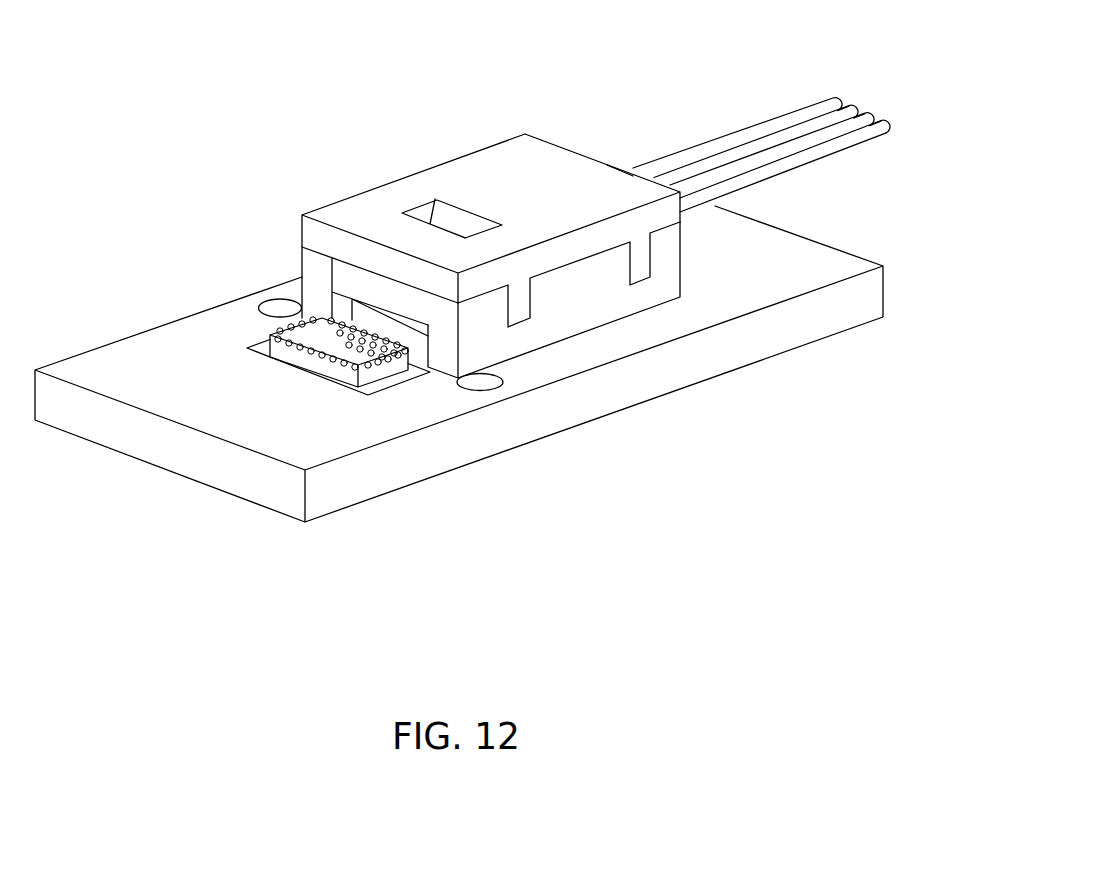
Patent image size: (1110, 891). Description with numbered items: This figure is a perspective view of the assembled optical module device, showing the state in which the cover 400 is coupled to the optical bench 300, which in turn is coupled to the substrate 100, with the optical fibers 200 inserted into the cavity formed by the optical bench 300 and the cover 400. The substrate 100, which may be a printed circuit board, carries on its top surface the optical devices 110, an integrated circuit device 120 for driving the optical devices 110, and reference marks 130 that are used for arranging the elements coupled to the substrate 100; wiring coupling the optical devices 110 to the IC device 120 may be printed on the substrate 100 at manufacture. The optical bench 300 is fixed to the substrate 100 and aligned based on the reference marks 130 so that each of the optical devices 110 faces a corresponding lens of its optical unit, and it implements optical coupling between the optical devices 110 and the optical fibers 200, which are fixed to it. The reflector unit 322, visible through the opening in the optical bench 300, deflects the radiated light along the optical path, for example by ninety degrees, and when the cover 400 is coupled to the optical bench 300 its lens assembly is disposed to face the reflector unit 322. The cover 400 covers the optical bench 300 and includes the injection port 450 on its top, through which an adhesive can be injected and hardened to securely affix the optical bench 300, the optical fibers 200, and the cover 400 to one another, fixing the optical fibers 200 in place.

The substrate 100 is at (120, 337).
The optical devices 110 is at (427, 372).
The integrated circuit (IC) device 120 is at (360, 350).
The reference marks 130 is at (272, 307).
The optical fibers 200 is at (702, 147).
The optical bench 300 is at (491, 316).
The reflector unit 322 is at (336, 288).
The cover 400 is at (491, 183).
The injection port 450 is at (450, 207).